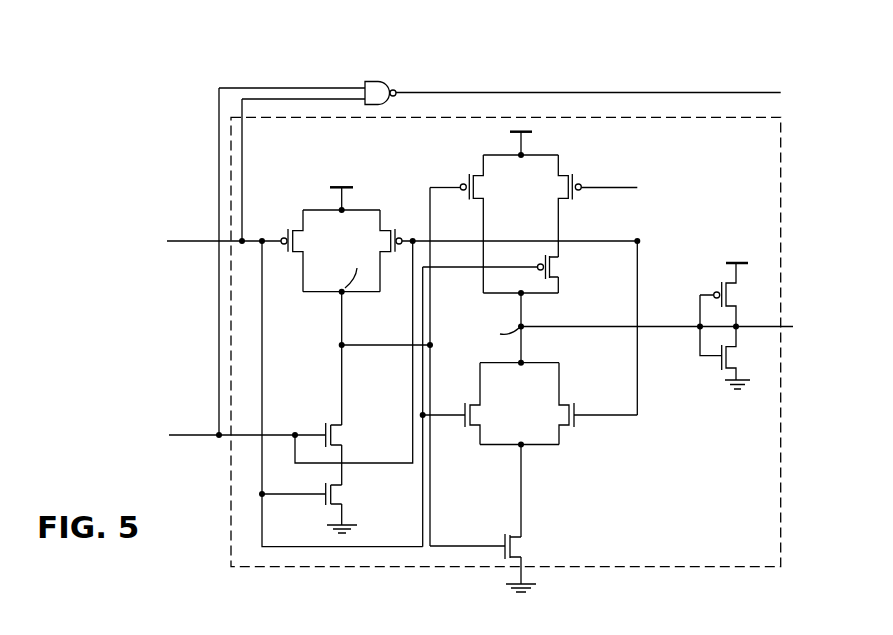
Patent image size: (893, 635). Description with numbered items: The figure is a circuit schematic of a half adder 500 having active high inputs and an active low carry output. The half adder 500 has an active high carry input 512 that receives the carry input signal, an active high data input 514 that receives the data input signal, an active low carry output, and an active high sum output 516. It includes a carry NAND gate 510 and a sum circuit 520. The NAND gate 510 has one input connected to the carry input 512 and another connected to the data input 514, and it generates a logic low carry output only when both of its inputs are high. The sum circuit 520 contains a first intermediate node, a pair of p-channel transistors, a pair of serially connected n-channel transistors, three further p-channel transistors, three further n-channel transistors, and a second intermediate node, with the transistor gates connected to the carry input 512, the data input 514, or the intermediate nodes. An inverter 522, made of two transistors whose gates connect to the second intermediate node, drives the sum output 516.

The half adder 500 is at (635, 62).
The carry NAND gate 510 is at (373, 82).
The carry input 512 is at (187, 244).
The data input 514 is at (197, 440).
The sum output 516 is at (763, 326).
The sum circuit 520 is at (230, 517).
The inverter 522 is at (700, 245).